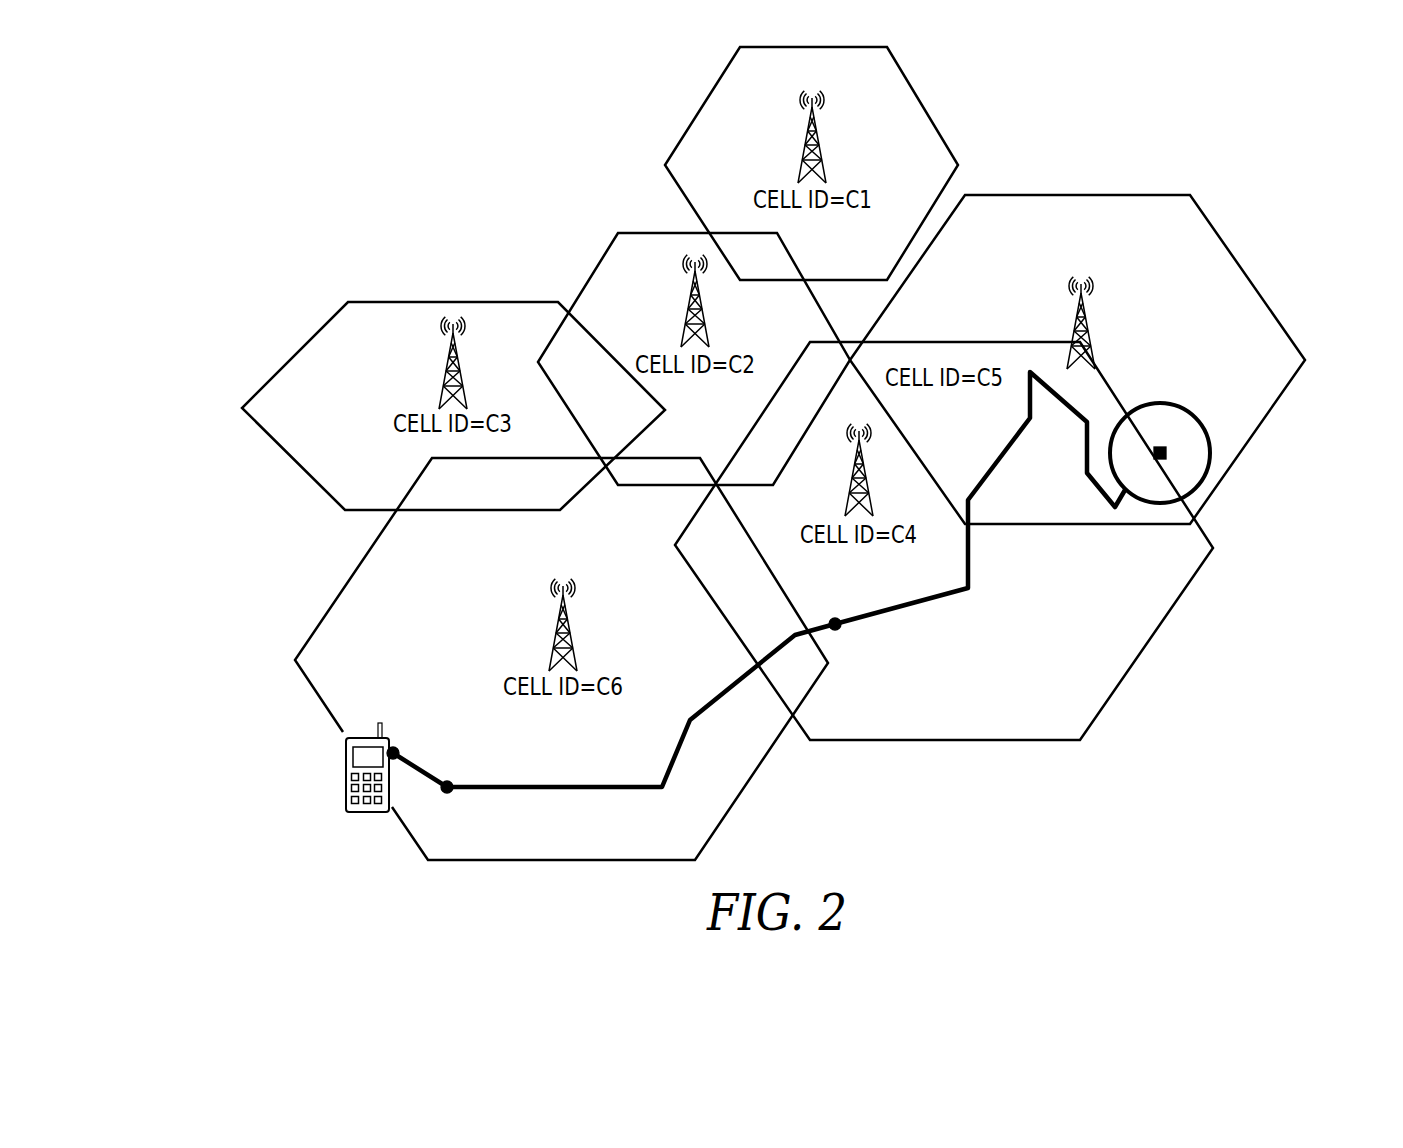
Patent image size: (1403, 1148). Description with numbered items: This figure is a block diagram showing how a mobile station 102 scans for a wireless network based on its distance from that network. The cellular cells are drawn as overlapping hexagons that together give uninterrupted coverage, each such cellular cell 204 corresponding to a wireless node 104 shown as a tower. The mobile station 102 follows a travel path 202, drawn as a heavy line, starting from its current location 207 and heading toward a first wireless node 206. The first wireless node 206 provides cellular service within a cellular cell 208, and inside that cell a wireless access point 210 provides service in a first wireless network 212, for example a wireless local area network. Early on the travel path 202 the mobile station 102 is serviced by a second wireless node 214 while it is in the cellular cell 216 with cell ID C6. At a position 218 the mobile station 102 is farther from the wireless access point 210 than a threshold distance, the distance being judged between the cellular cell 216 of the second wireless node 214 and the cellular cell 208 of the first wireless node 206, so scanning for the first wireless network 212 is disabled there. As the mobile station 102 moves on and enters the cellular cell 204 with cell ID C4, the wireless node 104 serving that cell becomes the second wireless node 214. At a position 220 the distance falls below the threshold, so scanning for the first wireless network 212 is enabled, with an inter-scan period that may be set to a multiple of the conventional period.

The mobile station 102 is at (346, 775).
The wireless node 104 is at (806, 140).
The travel path 202 is at (923, 602).
The cellular cell 204 is at (720, 76).
The first wireless node 206 is at (1088, 327).
The current location 207 is at (400, 753).
The cellular cell 208 is at (1305, 360).
The wireless access point 210 is at (1160, 446).
The first wireless network 212 is at (1187, 407).
The second wireless node 214 is at (557, 625).
The cellular cell 216 is at (295, 660).
The position 218 is at (448, 793).
The position 220 is at (835, 618).